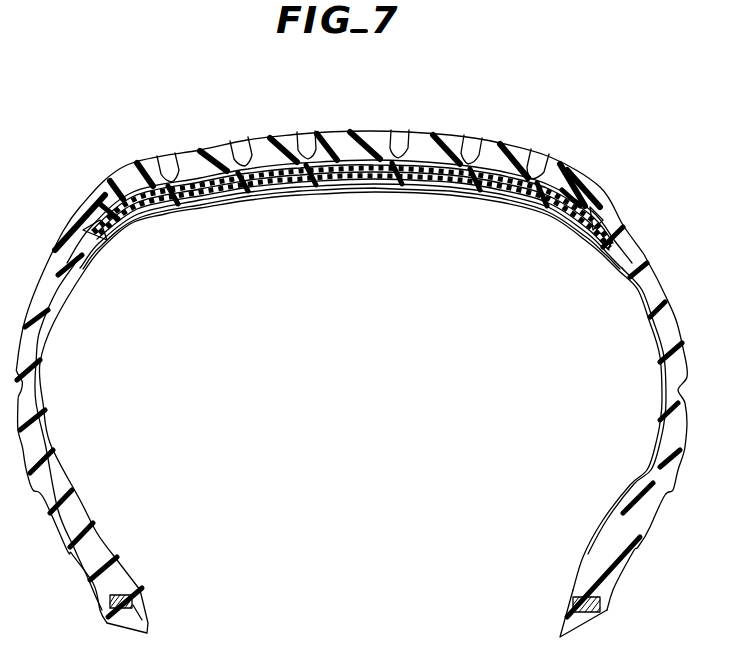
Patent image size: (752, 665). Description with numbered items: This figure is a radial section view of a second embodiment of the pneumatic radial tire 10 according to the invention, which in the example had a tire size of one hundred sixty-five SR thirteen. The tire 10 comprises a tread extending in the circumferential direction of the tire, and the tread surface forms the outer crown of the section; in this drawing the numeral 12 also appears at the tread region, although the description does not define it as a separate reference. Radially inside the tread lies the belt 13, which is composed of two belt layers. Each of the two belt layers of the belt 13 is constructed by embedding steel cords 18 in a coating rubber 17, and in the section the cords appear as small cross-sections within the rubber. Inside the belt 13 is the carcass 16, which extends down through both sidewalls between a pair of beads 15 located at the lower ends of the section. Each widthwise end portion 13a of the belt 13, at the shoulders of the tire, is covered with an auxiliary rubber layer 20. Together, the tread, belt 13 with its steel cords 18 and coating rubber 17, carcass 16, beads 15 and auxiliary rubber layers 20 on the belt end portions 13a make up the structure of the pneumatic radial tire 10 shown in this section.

The pneumatic radial tire 10 is at (465, 112).
The tread 12 is at (515, 148).
The belt 13 is at (358, 160).
The widthwise end portion of the belt 13a is at (133, 200).
The bead 15 is at (137, 603).
The carcass 16 is at (83, 260).
The coating rubber 17 is at (263, 150).
The steel cords 18 is at (197, 183).
The auxiliary rubber layer 20 is at (100, 203).